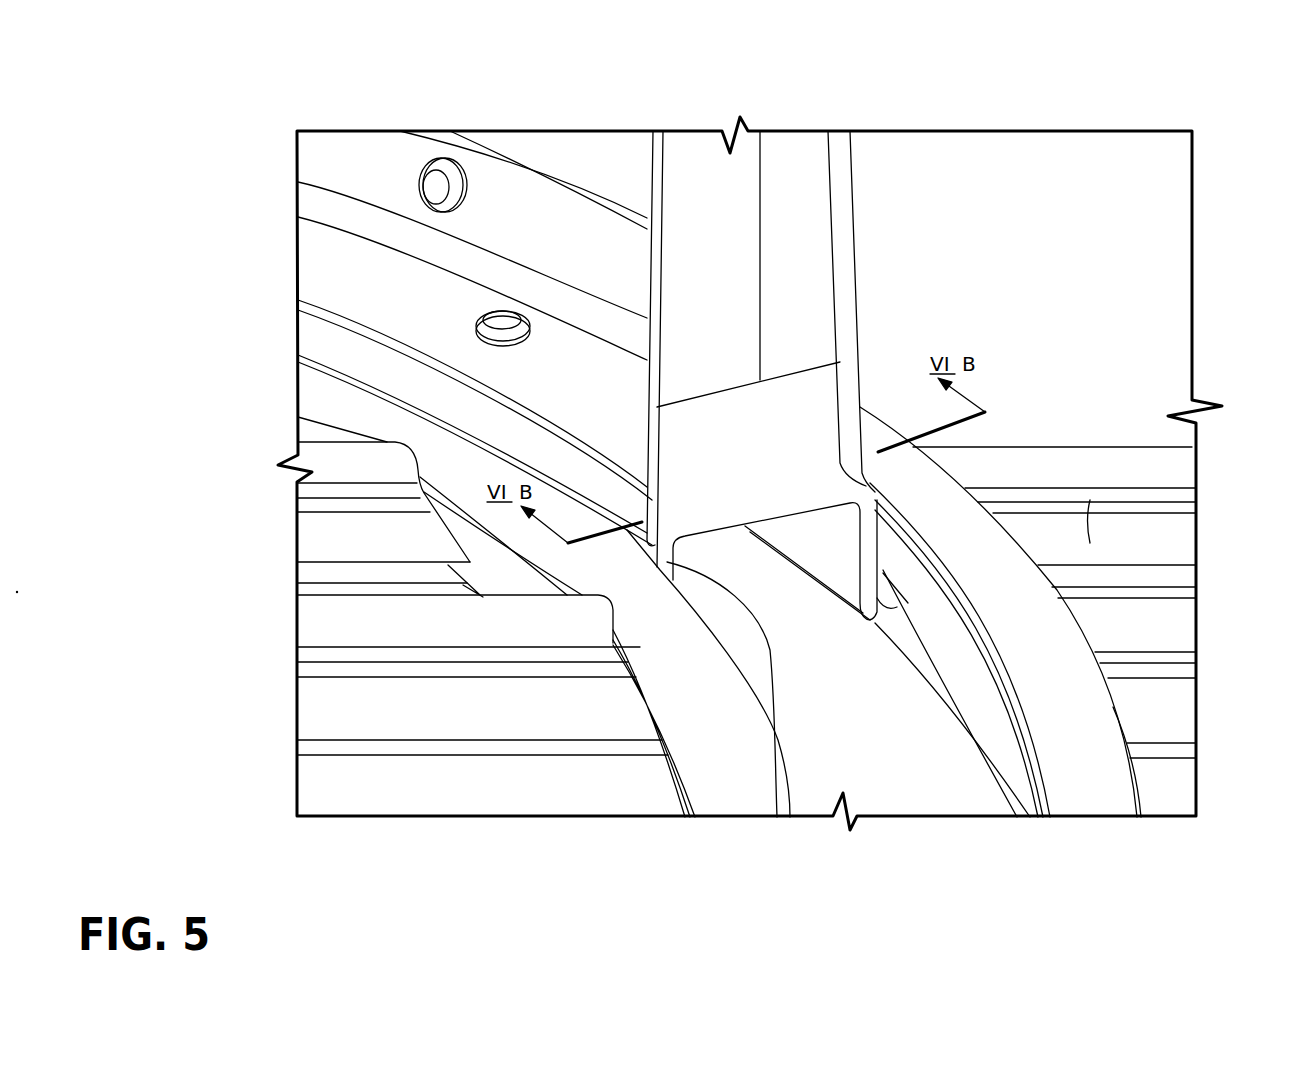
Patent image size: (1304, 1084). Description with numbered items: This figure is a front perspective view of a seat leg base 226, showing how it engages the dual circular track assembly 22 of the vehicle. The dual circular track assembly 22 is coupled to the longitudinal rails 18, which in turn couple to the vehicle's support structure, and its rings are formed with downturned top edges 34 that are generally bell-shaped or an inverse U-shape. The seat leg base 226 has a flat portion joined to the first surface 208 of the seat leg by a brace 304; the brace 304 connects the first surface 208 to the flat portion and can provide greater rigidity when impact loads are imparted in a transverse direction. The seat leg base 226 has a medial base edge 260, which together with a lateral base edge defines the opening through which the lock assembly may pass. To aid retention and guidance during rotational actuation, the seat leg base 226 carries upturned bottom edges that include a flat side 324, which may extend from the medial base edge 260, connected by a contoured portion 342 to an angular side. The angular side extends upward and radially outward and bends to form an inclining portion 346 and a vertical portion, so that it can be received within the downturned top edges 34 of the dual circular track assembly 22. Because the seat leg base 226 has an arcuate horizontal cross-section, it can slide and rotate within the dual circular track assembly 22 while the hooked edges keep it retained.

The longitudinal rails 18 is at (357, 615).
The dual circular track assembly 22 is at (1220, 537).
The downturned top edges 34 is at (873, 430).
The first surface 208 is at (620, 163).
The seat leg base 226 is at (365, 165).
The medial base edge 260 is at (362, 287).
The brace 304 is at (537, 206).
The flat side 324 is at (863, 537).
The contoured portion 342 is at (872, 622).
The inclining portion 346 is at (877, 623).